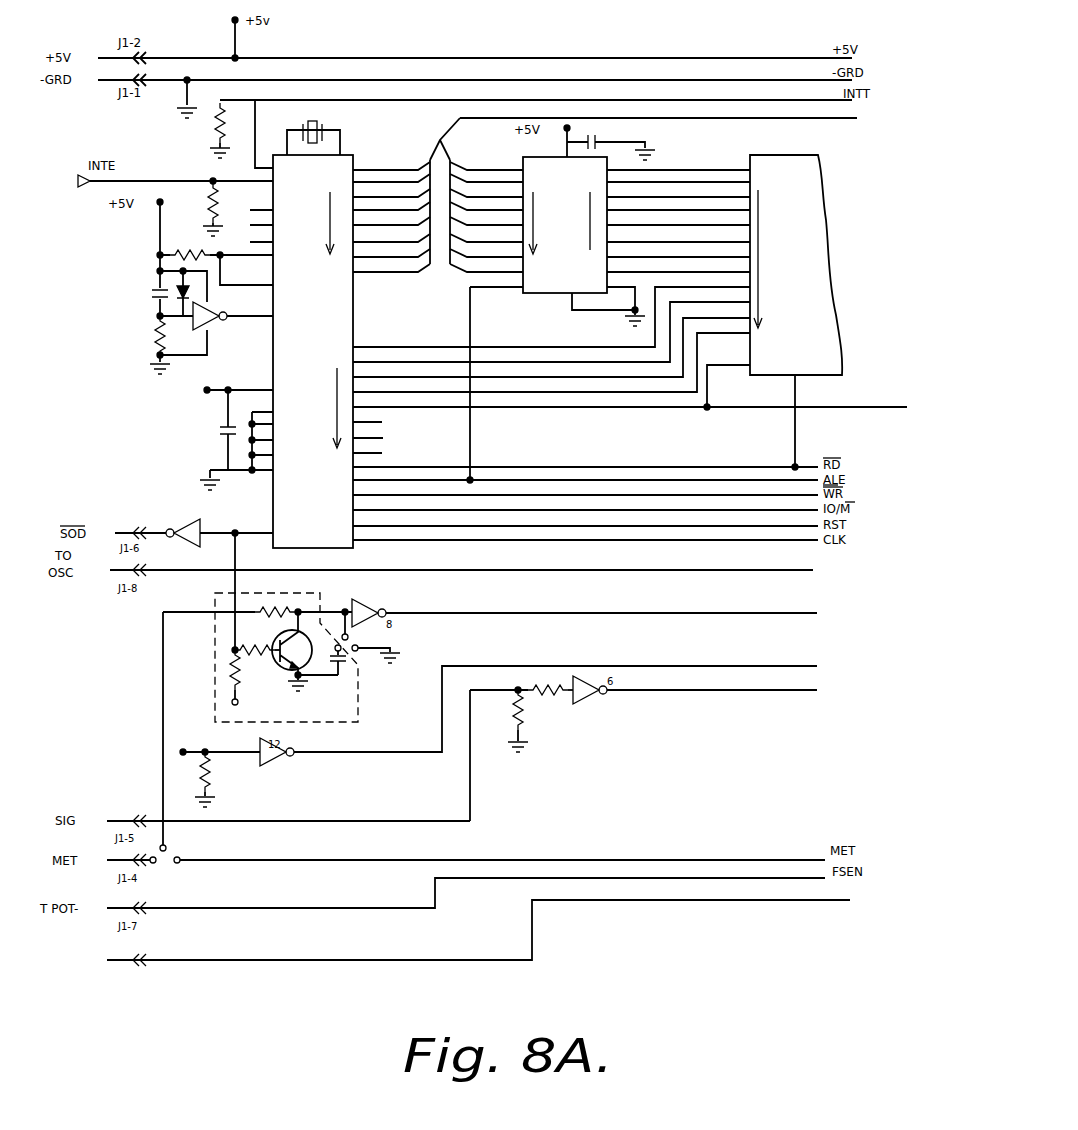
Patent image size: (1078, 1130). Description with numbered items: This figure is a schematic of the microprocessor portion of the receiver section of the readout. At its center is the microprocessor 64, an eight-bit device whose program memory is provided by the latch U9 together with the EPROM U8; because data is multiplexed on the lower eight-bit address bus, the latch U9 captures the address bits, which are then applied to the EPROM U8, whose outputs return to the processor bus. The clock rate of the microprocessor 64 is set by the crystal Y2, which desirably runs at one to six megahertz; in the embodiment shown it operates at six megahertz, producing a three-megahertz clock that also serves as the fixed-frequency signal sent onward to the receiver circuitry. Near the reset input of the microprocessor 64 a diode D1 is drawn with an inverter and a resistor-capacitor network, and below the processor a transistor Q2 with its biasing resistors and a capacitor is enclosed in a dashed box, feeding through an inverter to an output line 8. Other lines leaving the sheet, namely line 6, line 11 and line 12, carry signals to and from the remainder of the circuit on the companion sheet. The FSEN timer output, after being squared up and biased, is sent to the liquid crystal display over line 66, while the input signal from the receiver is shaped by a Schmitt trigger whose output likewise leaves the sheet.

The microprocessor 64 is at (355, 298).
The line to LCD display 66 is at (772, 880).
The output line 8 is at (602, 603).
The output line 6 is at (808, 681).
The line 11 to oscillator 11 is at (466, 563).
The line 12 is at (894, 398).
The 2732 EPROM U8 is at (812, 208).
The 74HC373 latch U9 is at (565, 225).
The transistor Q2 is at (281, 650).
The crystal Y2 is at (313, 130).
The diode D1 is at (175, 288).